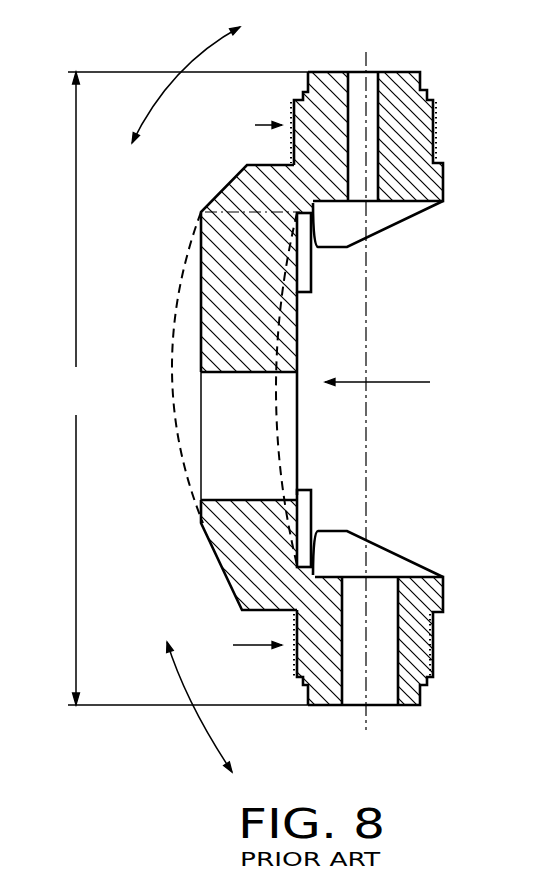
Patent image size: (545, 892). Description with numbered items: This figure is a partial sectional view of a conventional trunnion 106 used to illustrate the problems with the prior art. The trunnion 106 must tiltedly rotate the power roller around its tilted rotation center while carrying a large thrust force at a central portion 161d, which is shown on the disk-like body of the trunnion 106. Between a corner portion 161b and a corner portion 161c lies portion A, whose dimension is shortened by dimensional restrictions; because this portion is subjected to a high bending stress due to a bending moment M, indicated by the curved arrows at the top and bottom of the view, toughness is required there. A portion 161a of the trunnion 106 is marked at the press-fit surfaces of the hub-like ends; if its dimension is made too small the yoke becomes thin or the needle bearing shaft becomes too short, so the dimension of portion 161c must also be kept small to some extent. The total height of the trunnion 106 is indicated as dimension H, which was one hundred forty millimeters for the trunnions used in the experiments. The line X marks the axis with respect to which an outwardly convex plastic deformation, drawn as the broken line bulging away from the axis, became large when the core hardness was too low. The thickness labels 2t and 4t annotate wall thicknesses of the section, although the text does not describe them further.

The trunnion 106 is at (440, 70).
The portion 161a is at (294, 134).
The corner portion 161b is at (318, 203).
The corner portion 161c is at (201, 211).
The central portion 161d is at (300, 337).
The portion A is at (212, 195).
The total height dimension H is at (188, 388).
The bending moment M is at (201, 407).
The line X— X is at (363, 394).
The thickness 2t is at (257, 373).
The thickness 4t is at (377, 369).